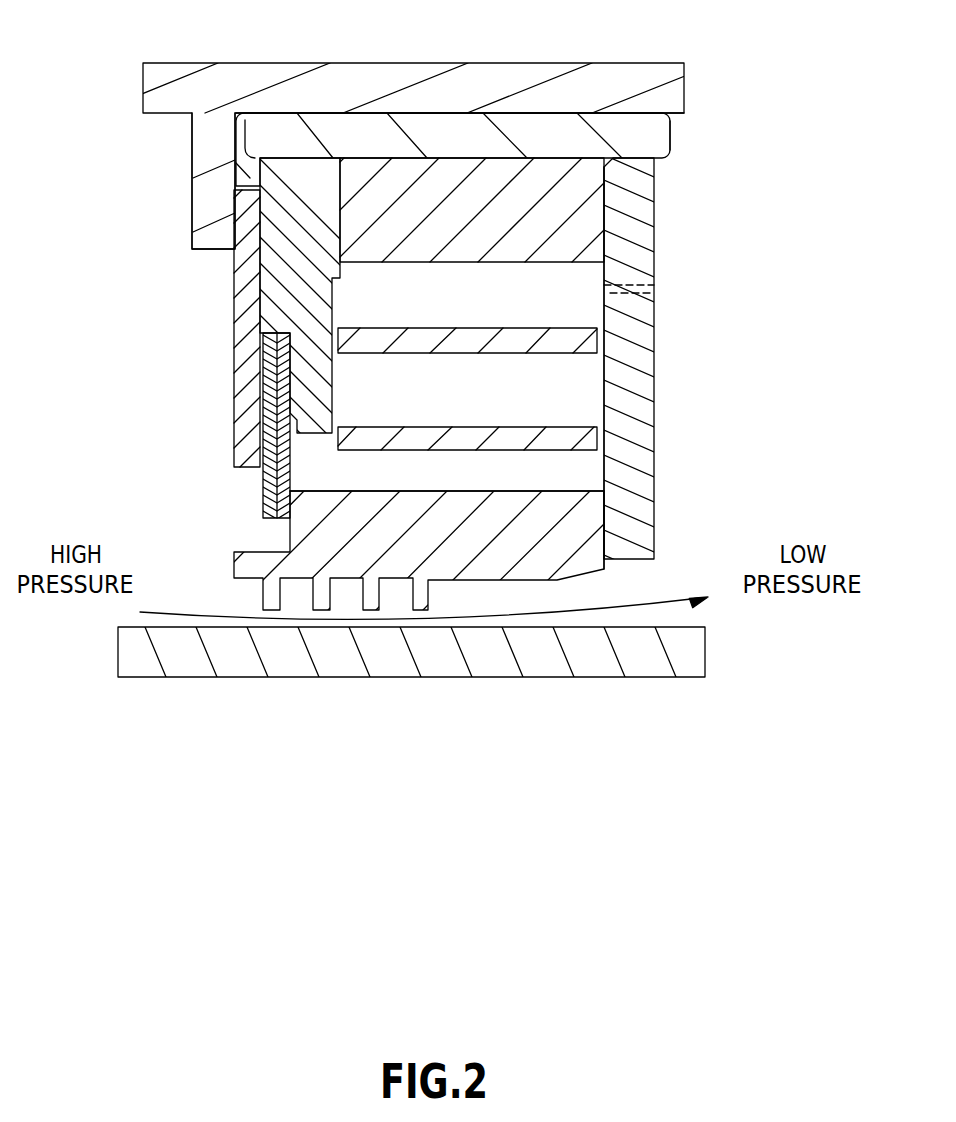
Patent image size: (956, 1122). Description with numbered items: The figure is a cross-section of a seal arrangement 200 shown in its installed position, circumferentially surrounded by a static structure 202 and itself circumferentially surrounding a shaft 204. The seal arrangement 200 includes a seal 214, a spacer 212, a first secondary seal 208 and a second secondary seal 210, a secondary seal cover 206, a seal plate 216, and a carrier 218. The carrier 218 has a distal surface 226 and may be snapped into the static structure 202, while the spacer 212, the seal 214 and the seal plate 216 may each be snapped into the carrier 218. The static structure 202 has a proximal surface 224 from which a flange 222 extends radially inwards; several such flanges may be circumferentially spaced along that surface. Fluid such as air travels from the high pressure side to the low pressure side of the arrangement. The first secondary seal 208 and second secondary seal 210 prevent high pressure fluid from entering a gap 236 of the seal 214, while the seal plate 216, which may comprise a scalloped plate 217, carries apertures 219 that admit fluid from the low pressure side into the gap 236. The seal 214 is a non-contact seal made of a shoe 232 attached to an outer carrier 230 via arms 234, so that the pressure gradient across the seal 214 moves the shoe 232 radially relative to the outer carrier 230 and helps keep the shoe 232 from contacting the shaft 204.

The seal arrangement 200 is at (763, 92).
The static structure 202 is at (273, 87).
The shaft 204 is at (705, 650).
The secondary seal cover 206 is at (236, 360).
The first secondary seal 208 is at (275, 512).
The second secondary seal 210 is at (265, 493).
The spacer 212 is at (290, 270).
The seal 214 is at (593, 528).
The seal plate 216 is at (654, 370).
The scalloped plate 217 is at (654, 333).
The carrier 218 is at (670, 136).
The apertures 219 is at (654, 292).
The flange 222 is at (192, 196).
The proximal surface 224 is at (620, 114).
The distal surface 226 is at (435, 113).
The outer carrier 230 is at (485, 223).
The shoe 232 is at (485, 549).
The arms 234 is at (543, 427).
The gap 236 is at (370, 483).